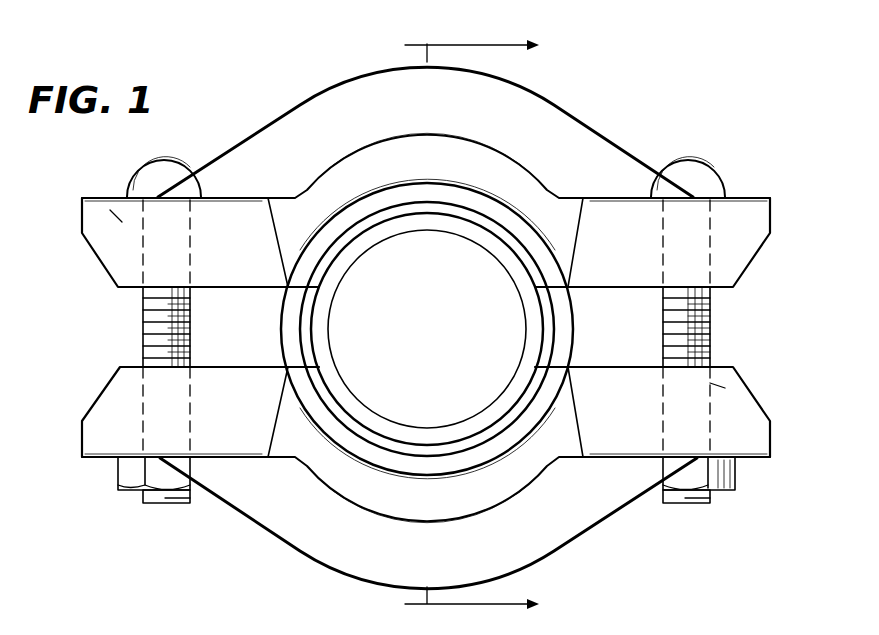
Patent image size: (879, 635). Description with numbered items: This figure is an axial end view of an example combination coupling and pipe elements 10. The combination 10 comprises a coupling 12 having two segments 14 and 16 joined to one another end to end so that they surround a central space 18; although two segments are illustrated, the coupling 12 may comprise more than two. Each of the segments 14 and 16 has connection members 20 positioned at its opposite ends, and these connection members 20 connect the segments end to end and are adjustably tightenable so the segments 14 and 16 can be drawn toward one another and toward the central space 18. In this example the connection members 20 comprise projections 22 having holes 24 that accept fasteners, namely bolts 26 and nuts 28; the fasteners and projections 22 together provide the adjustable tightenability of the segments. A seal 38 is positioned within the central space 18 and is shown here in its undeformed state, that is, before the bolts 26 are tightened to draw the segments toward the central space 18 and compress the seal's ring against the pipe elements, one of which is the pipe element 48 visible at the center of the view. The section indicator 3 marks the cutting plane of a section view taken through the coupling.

The combination coupling and pipe elements 10 is at (733, 126).
The coupling 12 is at (616, 114).
The segment 14 is at (293, 520).
The segment 16 is at (293, 123).
The central space 18 is at (413, 315).
The connection member 20 is at (103, 403).
The projection 22 is at (200, 412).
The hole 24 is at (100, 195).
The bolt 26 is at (143, 318).
The nut 28 is at (128, 482).
The seal 38 is at (283, 342).
The pipe element 48 is at (522, 363).
The section line for FIG. 3 is at (482, 326).